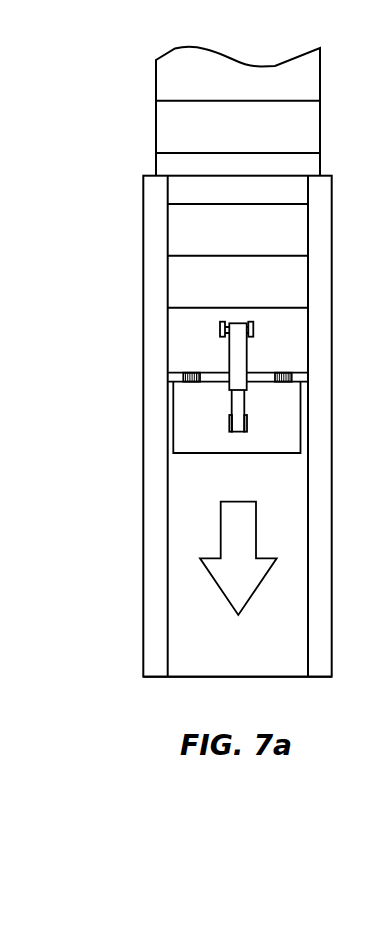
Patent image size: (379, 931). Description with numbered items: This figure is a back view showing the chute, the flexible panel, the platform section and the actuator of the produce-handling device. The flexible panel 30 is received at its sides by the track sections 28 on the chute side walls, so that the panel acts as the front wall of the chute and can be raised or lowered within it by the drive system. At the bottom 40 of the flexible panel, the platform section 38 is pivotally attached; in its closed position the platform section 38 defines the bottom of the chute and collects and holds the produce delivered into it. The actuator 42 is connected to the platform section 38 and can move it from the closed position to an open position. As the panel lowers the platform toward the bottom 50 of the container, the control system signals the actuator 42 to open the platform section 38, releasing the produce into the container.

The track section 28 is at (158, 632).
The flexible panel 30 is at (197, 172).
The platform section 38 is at (200, 418).
The bottom of the flexible panel 40 is at (207, 330).
The actuator 42 is at (237, 348).
The bottom of the container 50 is at (202, 678).